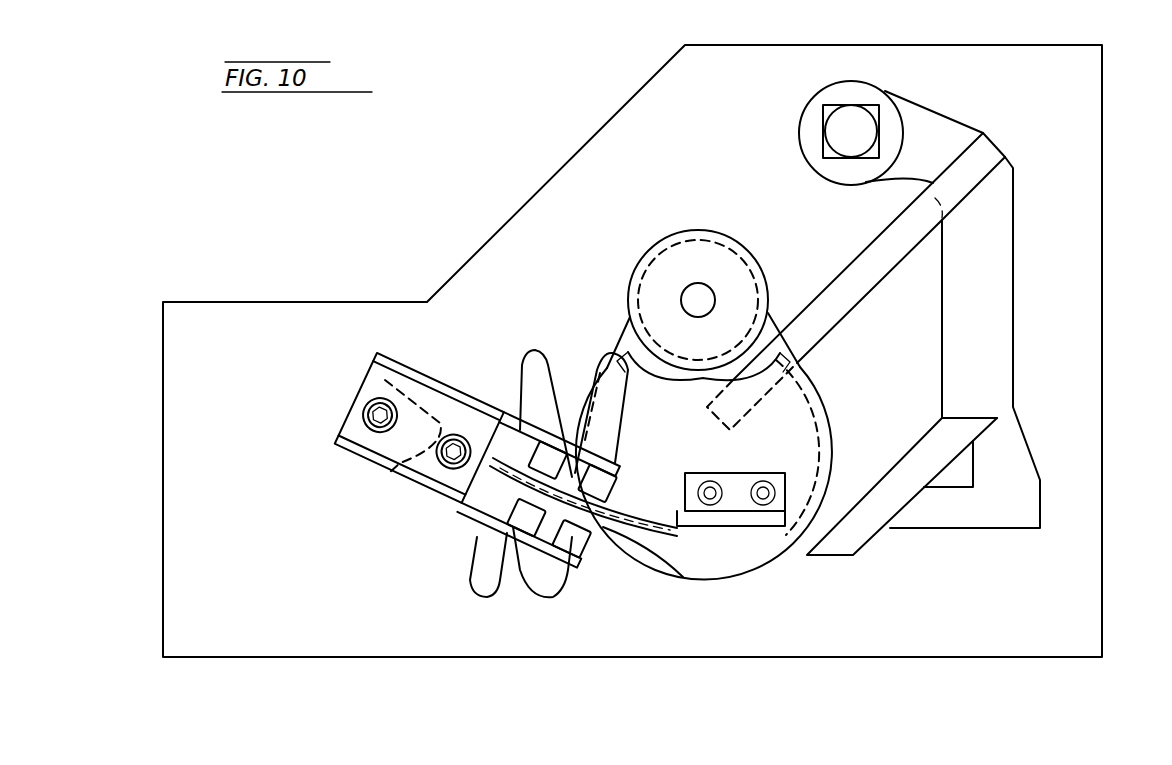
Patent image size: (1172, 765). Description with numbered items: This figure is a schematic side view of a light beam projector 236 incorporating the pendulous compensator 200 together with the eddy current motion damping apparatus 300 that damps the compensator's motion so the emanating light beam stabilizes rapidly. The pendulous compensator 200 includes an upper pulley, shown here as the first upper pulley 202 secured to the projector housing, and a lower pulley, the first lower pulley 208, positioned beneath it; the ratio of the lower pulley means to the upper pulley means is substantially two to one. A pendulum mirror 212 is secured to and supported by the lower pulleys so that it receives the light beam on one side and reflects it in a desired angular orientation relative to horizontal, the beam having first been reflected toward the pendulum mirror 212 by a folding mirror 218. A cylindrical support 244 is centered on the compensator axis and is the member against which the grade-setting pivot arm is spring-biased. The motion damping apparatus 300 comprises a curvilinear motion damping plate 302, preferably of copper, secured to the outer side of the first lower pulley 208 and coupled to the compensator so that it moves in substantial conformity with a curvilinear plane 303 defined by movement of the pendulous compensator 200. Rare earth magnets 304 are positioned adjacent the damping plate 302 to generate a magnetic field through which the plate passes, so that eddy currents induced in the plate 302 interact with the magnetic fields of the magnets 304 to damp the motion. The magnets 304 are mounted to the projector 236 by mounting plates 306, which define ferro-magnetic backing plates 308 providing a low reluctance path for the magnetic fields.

The light beam projector 236 is at (416, 268).
The pendulous compensator 200 is at (668, 222).
The first upper pulley 202 is at (722, 248).
The first lower pulley 208 is at (810, 402).
The pendulum mirror 212 is at (948, 168).
The cylindrical support 244 is at (1016, 196).
The folding mirror 218 is at (857, 557).
The motion damping apparatus 300 is at (456, 594).
The motion damping plate 302 is at (683, 575).
The curvilinear plane 303 is at (385, 480).
The rare earth magnets 304 is at (521, 372).
The mounting plates 306 is at (376, 362).
The backing plates 308 is at (521, 385).